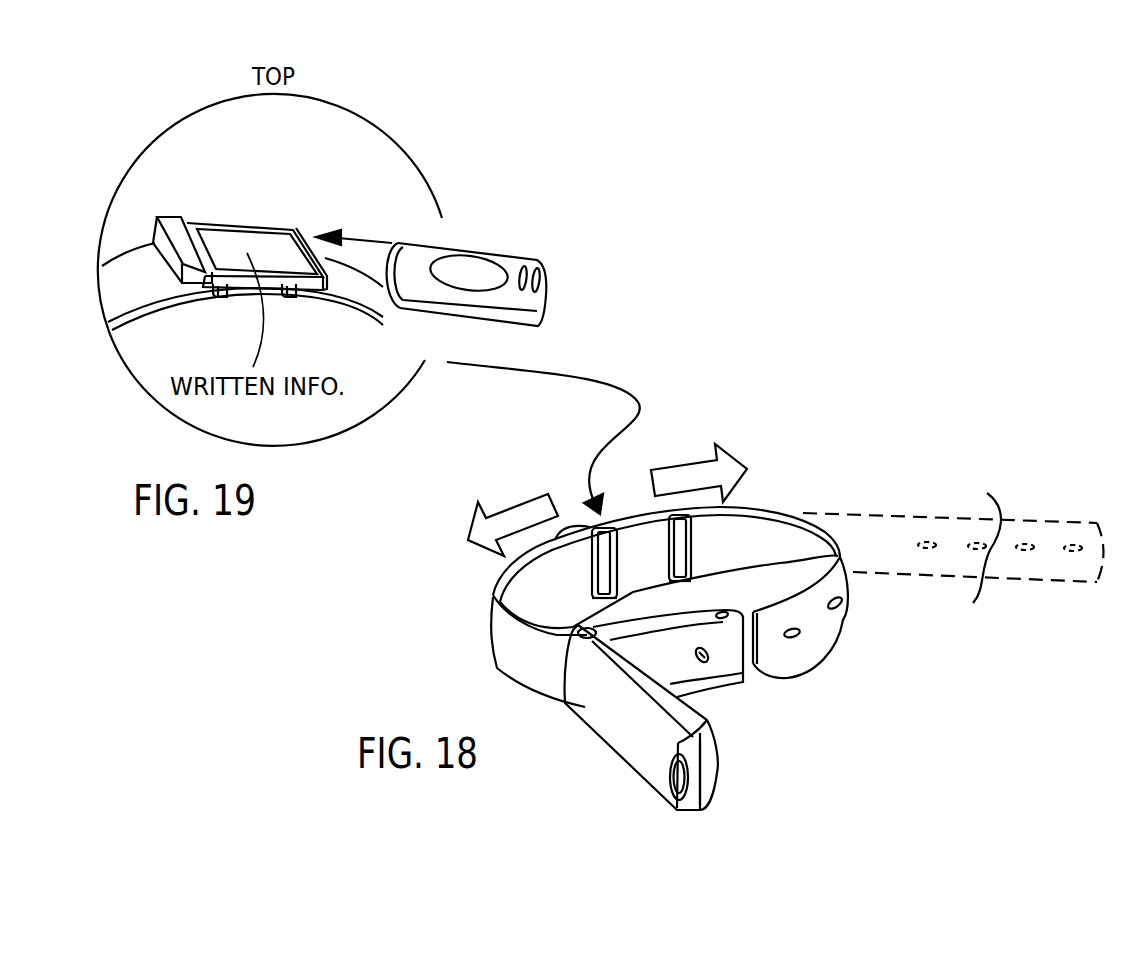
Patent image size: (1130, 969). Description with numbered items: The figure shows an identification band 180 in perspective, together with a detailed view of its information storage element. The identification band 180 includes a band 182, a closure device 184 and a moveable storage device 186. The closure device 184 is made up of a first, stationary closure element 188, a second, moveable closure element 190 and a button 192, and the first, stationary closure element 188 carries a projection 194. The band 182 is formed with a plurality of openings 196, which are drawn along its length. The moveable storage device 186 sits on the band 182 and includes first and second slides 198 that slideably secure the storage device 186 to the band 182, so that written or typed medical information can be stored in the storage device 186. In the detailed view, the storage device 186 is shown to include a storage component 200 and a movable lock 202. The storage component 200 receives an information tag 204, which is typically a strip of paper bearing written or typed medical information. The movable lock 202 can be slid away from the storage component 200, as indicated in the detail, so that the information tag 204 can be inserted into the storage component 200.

In FIG. 18, the identification band 180 is at (462, 598).
In FIG. 18, the band 182 is at (520, 645).
In FIG. 18, the closure device 184 is at (618, 763).
In FIG. 19, the moveable storage device 186 is at (287, 200).
In FIG. 18, the moveable storage device 186 is at (623, 518).
In FIG. 18, the first, stationary closure element 188 is at (745, 680).
In FIG. 18, the second, moveable closure element 190 is at (674, 813).
In FIG. 18, the button 192 is at (700, 777).
In FIG. 18, the projection 194 is at (704, 662).
In FIG. 18, the openings 196 is at (798, 637).
In FIG. 19, the first and second slides 198 is at (215, 297).
In FIG. 18, the first and second slides 198 is at (613, 595).
In FIG. 19, the storage component 200 is at (177, 233).
In FIG. 19, the movable lock 202 is at (415, 250).
In FIG. 19, the information tag 204 is at (238, 252).